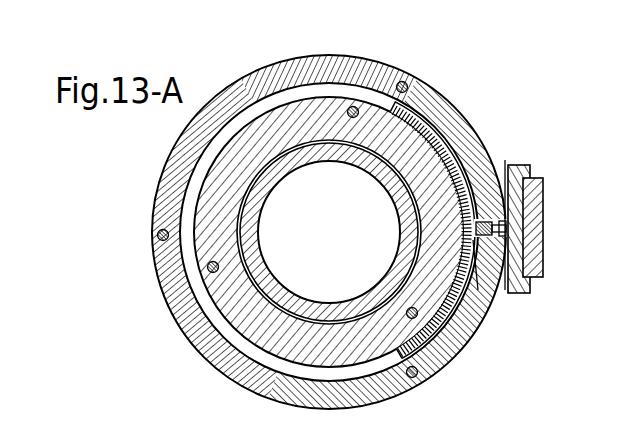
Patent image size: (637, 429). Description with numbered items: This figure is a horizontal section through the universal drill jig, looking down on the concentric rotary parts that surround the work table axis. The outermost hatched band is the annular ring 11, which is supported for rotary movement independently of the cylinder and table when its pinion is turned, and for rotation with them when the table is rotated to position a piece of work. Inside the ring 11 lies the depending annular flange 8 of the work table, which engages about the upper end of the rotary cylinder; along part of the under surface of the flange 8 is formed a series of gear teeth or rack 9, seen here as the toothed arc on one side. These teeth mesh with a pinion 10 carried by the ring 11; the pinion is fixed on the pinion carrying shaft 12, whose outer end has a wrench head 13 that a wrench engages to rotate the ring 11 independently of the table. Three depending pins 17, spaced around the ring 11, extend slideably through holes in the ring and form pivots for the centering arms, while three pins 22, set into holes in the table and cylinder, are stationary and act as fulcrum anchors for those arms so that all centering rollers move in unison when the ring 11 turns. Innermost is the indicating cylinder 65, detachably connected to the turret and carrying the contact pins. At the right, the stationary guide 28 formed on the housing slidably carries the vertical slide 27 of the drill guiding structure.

The depending annular flange 8 is at (345, 93).
The gear teeth or rack 9 is at (450, 162).
The pinion 10 is at (500, 221).
The annular ring 11 is at (430, 92).
The pinion carrying shaft 12 is at (480, 290).
The wrench head 13 is at (505, 290).
The depending pins 17 is at (408, 84).
The pins 22 is at (338, 105).
The slide 27 is at (544, 222).
The stationary guide 28 is at (531, 168).
The inner indicating cylinder 65 is at (266, 298).